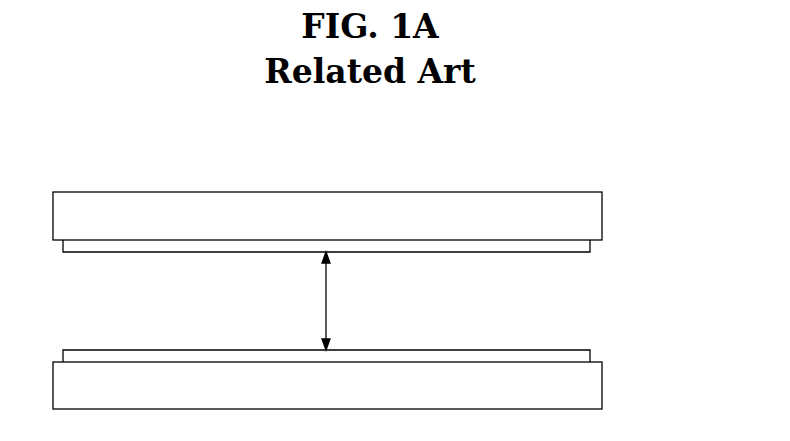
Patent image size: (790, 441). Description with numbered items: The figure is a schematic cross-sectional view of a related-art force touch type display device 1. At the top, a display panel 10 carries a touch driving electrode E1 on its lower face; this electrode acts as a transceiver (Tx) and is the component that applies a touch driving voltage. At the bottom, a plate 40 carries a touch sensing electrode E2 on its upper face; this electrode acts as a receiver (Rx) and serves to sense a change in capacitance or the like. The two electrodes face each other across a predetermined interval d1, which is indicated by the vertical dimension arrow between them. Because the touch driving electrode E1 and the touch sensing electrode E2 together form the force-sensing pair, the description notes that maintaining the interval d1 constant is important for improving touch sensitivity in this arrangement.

The force touch type display device 1 is at (334, 121).
The display panel 10 is at (588, 211).
The touch driving electrode E1 is at (588, 245).
The interval d1 is at (339, 301).
The touch sensing electrode E2 is at (588, 353).
The plate 40 is at (588, 391).